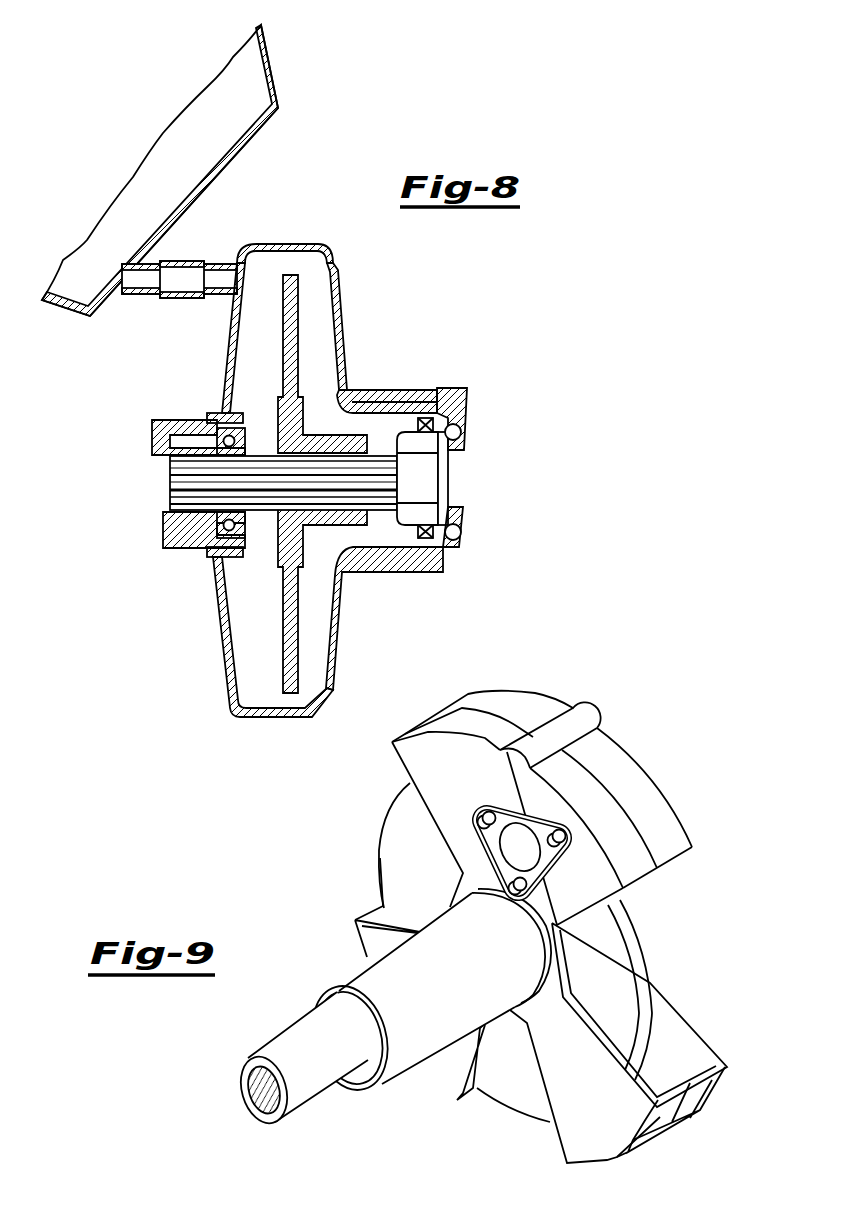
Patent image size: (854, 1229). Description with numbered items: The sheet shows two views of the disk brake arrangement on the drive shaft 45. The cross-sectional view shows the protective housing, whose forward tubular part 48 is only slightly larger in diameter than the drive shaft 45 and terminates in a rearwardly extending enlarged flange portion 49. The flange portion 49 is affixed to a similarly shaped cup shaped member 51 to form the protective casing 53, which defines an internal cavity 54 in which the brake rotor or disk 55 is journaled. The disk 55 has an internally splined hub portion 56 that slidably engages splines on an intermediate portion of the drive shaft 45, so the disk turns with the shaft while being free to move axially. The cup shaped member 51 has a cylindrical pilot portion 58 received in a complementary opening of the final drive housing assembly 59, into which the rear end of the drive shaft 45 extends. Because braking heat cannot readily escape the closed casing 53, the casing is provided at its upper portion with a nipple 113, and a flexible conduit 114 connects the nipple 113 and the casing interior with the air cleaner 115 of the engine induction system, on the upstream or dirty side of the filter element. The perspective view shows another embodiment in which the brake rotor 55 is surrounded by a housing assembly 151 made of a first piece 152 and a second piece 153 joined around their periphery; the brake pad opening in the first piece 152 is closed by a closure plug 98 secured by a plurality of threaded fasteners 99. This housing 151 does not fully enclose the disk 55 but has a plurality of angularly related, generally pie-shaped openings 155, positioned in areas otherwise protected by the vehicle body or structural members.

In FIG. 8, the drive shaft 45 is at (182, 493).
In FIG. 9, the drive shaft 45 is at (334, 1080).
In FIG. 8, the forward tubular part 48 is at (186, 546).
In FIG. 9, the forward tubular part 48 is at (366, 976).
In FIG. 8, the flange portion 49 is at (222, 357).
In FIG. 8, the cup shaped member 51 is at (340, 297).
In FIG. 8, the protective casing 53 is at (280, 713).
In FIG. 8, the internal cavity 54 is at (322, 372).
In FIG. 8, the brake rotor or disk 55 is at (296, 636).
In FIG. 9, the brake rotor or disk 55 is at (638, 958).
In FIG. 8, the internally splined hub portion 56 is at (346, 441).
In FIG. 8, the cylindrical pilot portion 58 is at (396, 402).
In FIG. 8, the final drive housing assembly 59 is at (456, 392).
In FIG. 8, the nipple 113 is at (231, 262).
In FIG. 8, the flexible conduit 114 is at (190, 267).
In FIG. 8, the air cleaner 115 is at (270, 64).
In FIG. 9, the closure plug 98 is at (546, 820).
In FIG. 9, the threaded fasteners 99 is at (480, 820).
In FIG. 9, the housing assembly 151 is at (515, 680).
In FIG. 9, the first piece 152 is at (414, 778).
In FIG. 9, the second piece 153 is at (630, 760).
In FIG. 9, the pie-shaped openings 155 is at (375, 908).